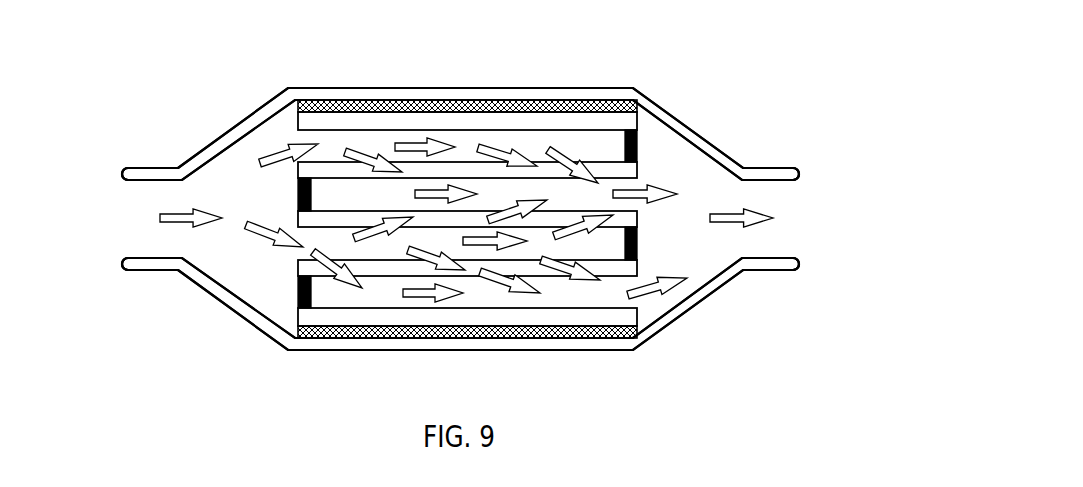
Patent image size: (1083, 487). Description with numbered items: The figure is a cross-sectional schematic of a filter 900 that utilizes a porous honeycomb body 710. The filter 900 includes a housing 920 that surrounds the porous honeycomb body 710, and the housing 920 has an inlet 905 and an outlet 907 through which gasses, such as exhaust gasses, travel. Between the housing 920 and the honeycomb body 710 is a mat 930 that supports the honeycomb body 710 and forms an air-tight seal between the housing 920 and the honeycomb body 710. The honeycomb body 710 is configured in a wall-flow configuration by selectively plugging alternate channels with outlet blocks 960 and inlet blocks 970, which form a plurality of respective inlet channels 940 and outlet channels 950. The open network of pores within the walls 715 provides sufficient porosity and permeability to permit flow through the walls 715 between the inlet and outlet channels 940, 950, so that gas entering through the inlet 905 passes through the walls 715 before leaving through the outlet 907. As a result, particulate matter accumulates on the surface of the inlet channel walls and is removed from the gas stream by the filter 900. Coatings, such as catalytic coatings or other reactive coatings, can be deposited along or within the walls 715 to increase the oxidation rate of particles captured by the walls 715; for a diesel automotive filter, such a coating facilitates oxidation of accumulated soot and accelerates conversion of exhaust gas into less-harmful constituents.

The filter 900 is at (720, 82).
The inlet 905 is at (150, 168).
The outlet 907 is at (772, 167).
The housing 920 is at (245, 110).
The mat 930 is at (522, 102).
The inlet channels 940 is at (602, 147).
The outlet channels 950 is at (498, 188).
The outlet blocks 960 is at (640, 145).
The inlet blocks 970 is at (297, 196).
The porous honeycomb body 710 is at (376, 120).
The walls 715 is at (328, 172).